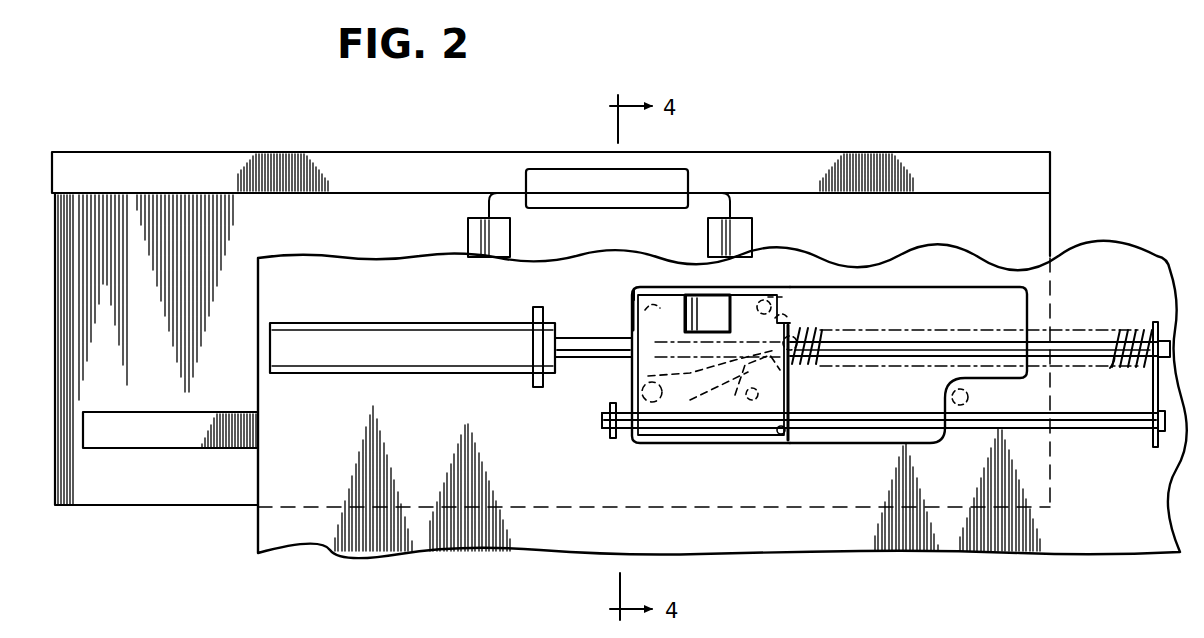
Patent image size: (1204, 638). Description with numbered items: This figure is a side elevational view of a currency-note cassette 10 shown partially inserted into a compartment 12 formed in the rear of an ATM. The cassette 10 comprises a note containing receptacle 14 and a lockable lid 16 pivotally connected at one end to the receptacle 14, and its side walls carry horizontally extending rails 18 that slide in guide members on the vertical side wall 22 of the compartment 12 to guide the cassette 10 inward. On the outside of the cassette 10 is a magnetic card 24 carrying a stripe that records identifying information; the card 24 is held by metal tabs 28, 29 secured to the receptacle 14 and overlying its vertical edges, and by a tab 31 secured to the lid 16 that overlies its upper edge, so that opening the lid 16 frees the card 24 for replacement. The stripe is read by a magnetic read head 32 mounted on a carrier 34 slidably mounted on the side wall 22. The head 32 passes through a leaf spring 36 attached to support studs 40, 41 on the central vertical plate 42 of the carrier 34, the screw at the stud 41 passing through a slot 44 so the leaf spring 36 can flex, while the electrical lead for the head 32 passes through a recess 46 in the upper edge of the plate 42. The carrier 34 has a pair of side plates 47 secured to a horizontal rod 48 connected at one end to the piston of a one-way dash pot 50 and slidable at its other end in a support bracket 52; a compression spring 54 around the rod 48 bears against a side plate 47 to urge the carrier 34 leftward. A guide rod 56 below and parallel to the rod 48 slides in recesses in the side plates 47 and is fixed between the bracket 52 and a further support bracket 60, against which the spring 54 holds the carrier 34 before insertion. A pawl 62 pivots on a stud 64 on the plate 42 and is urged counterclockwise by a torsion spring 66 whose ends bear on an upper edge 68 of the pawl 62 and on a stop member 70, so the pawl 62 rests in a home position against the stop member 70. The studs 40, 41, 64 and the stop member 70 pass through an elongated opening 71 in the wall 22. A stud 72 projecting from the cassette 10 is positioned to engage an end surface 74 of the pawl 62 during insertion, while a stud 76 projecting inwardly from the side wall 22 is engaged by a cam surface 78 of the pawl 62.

The cassette 10 is at (337, 152).
The compartment 12 is at (1088, 248).
The note containing receptacle 14 is at (195, 493).
The lockable lid 16 is at (196, 162).
The rails 18 is at (162, 438).
The side wall 22 is at (318, 267).
The magnetic card 24 is at (490, 204).
The metal tab 28 is at (468, 236).
The metal tab 29 is at (752, 236).
The metal tab 31 is at (560, 176).
The magnetic read head 32 is at (690, 317).
The carrier 34 is at (797, 382).
The leaf spring 36 is at (636, 292).
The support stud 40 is at (640, 305).
The support stud 41 is at (757, 300).
The central vertical plate 42 is at (752, 402).
The slot 44 is at (776, 284).
The recess 46 is at (716, 302).
The side plates 47 is at (632, 333).
The rod 48 is at (998, 345).
The one-way dash pot 50 is at (380, 330).
The support bracket 52 is at (1152, 388).
The compression spring 54 is at (1128, 330).
The guide rod 56 is at (1087, 430).
The support bracket 60 is at (611, 436).
The pawl 62 is at (668, 412).
The stud 64 is at (797, 372).
The torsion spring 66 is at (781, 447).
The upper edge 68 is at (788, 321).
The stop member 70 is at (735, 396).
The elongated opening 71 is at (897, 292).
The stud 72 is at (645, 395).
The end surface 74 is at (650, 371).
The stud 76 is at (970, 397).
The cam surface 78 is at (700, 402).